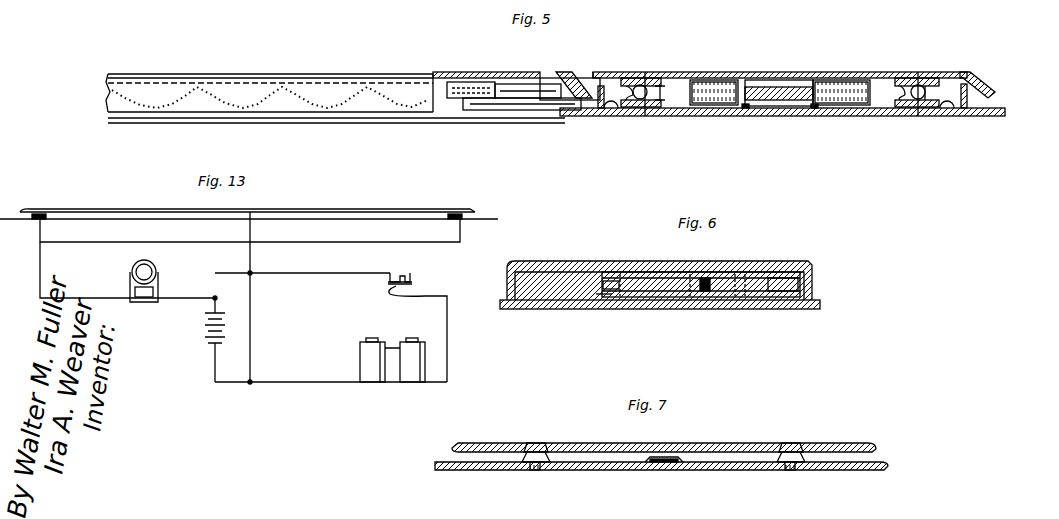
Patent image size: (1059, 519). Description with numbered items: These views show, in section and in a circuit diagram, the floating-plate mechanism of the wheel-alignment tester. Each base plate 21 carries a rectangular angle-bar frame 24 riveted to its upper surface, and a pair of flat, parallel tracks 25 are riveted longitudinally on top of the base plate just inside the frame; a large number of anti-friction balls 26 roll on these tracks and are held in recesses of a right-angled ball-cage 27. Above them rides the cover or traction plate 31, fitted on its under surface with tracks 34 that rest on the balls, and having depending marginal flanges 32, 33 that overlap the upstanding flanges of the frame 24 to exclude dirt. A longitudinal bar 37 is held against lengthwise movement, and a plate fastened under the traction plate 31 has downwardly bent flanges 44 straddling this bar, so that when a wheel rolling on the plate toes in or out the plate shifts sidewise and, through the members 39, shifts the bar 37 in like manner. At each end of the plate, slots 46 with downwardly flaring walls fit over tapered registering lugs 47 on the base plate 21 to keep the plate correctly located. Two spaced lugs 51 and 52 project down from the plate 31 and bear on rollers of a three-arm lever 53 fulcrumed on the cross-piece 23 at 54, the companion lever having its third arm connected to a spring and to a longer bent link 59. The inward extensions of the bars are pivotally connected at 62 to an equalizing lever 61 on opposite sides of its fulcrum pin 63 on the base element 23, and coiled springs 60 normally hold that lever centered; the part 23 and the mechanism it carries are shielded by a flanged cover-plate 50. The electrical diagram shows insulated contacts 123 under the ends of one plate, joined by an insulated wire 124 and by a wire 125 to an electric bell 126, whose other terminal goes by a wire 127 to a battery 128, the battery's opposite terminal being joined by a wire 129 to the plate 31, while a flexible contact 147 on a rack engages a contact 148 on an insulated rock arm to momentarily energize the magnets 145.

In FIG. 5, the base plate 21 is at (752, 106).
In FIG. 13, the base plate 21 is at (298, 212).
In FIG. 7, the base plate 21 is at (632, 471).
In FIG. 5, the cross-piece 23 is at (376, 123).
In FIG. 5, the angle-bar frame 24 is at (600, 108).
In FIG. 5, the track 25 is at (653, 116).
In FIG. 5, the anti-friction ball 26 is at (640, 78).
In FIG. 5, the ball-cage 27 is at (668, 94).
In FIG. 5, the traction plate 31 is at (760, 72).
In FIG. 13, the traction plate 31 is at (165, 209).
In FIG. 7, the traction plate 31 is at (610, 443).
In FIG. 5, the marginal flange 32 is at (988, 80).
In FIG. 5, the marginal flange 33 is at (575, 64).
In FIG. 5, the track 34 is at (660, 80).
In FIG. 5, the bar 37 is at (780, 100).
In FIG. 5, the member 39 is at (710, 105).
In FIG. 5, the downwardly-bent flange 44 is at (745, 108).
In FIG. 7, the slot 46 is at (536, 443).
In FIG. 7, the registering lug 47 is at (524, 466).
In FIG. 5, the cover-plate 50 is at (318, 58).
In FIG. 6, the cover-plate 50 is at (610, 262).
In FIG. 5, the lug 51 is at (583, 78).
In FIG. 5, the lug 52 is at (474, 86).
In FIG. 5, the three-arm lever 53 is at (495, 110).
In FIG. 5, the fulcrum 54 is at (522, 90).
In FIG. 6, the bent link 59 is at (588, 302).
In FIG. 6, the coiled spring 60 is at (603, 284).
In FIG. 6, the equalizing lever 61 is at (660, 274).
In FIG. 6, the pivotal connection 62 is at (690, 274).
In FIG. 6, the fulcrum pin 63 is at (738, 272).
In FIG. 13, the insulated electrical contact 123 is at (40, 212).
In FIG. 7, the insulated electrical contact 123 is at (662, 457).
In FIG. 13, the insulated wire 124 is at (322, 244).
In FIG. 13, the wire 125 is at (40, 270).
In FIG. 13, the electric-bell 126 is at (132, 276).
In FIG. 13, the wire 127 is at (200, 296).
In FIG. 13, the battery 128 is at (203, 325).
In FIG. 13, the wire 129 is at (250, 345).
In FIG. 13, the magnet 145 is at (360, 366).
In FIG. 13, the flexible electric-contact 147 is at (424, 280).
In FIG. 13, the electric-contact 148 is at (392, 296).